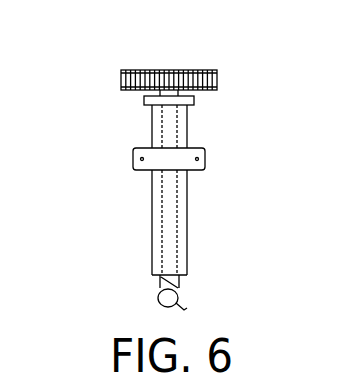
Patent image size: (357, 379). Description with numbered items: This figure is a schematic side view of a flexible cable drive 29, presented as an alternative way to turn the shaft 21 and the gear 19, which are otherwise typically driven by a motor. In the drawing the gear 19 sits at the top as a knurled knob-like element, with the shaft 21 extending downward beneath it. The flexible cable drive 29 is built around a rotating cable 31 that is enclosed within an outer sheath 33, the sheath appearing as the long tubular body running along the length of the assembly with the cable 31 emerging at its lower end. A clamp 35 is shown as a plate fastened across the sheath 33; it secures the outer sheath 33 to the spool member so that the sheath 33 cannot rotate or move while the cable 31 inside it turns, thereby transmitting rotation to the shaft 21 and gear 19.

The gear 19 is at (197, 68).
The shaft 21 is at (179, 93).
The flexible cable drive 29 is at (233, 126).
The rotating cable 31 is at (180, 285).
The outer sheath 33 is at (187, 212).
The clamp 35 is at (133, 155).